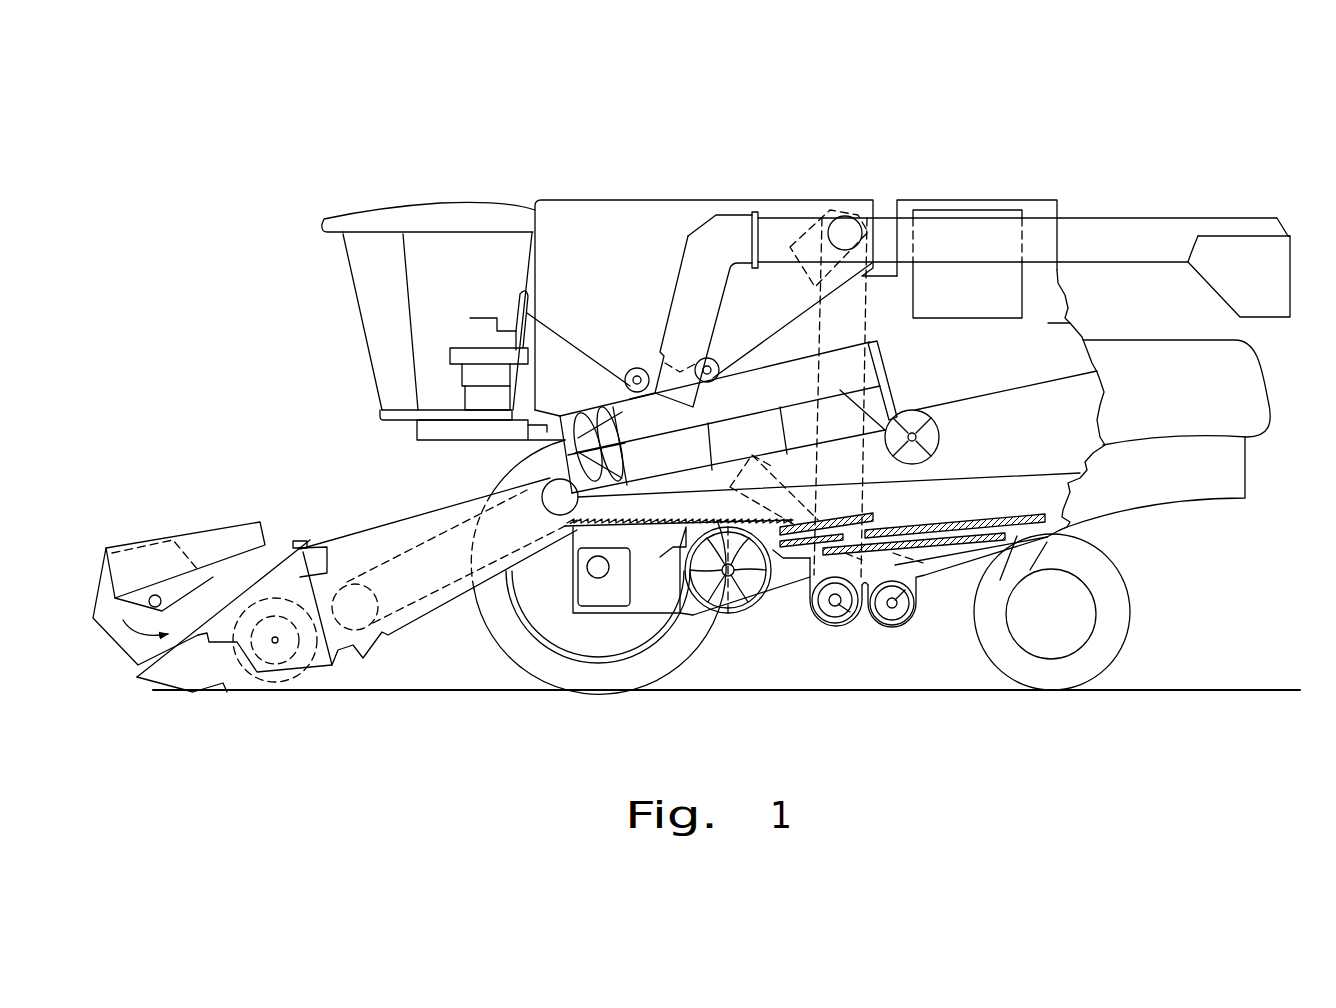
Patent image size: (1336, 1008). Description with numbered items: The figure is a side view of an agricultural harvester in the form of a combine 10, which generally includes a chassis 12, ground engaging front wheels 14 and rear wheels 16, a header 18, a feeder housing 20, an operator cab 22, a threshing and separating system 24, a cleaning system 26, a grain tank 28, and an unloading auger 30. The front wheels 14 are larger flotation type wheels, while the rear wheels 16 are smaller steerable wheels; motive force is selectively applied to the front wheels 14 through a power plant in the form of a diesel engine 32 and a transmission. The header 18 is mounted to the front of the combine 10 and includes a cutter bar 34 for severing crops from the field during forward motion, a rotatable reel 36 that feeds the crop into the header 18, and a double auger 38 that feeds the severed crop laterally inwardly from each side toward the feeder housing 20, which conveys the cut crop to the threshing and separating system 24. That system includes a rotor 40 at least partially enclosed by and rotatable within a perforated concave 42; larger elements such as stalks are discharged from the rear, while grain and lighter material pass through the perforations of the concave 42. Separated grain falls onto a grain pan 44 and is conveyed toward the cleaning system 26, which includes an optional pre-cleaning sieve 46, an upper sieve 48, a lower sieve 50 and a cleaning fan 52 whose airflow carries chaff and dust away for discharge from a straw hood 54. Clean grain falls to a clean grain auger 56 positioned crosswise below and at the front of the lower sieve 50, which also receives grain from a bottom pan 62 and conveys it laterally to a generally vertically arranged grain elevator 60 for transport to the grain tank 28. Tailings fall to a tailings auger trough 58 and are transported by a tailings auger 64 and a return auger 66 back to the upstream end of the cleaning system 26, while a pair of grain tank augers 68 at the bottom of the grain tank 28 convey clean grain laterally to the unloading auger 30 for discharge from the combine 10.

The combine 10 is at (424, 185).
The chassis 12 is at (1062, 530).
The front wheels 14 is at (503, 650).
The rear wheels 16 is at (1128, 633).
The header 18 is at (188, 518).
The feeder housing 20 is at (397, 522).
The operator cab 22 is at (356, 302).
The threshing and separating system 24 is at (503, 460).
The cleaning system 26 is at (787, 630).
The grain tank 28 is at (592, 198).
The unloading auger 30 is at (1143, 226).
The diesel engine 32 is at (958, 210).
The cutter bar 34 is at (203, 693).
The rotatable reel 36 is at (103, 590).
The double auger 38 is at (277, 662).
The rotor 40 is at (588, 408).
The perforated concave 42 is at (766, 395).
The grain pan 44 is at (577, 533).
The pre-cleaning sieve 46 is at (862, 520).
The upper sieve 48 is at (968, 516).
The lower sieve 50 is at (940, 535).
The cleaning fan 52 is at (733, 627).
The straw hood 54 is at (1253, 382).
The clean grain auger 56 is at (838, 623).
The tailings auger trough 58 is at (1047, 542).
The grain elevator 60 is at (865, 325).
The bottom pan 62 is at (1017, 536).
The tailings auger 64 is at (887, 625).
The return auger 66 is at (807, 498).
The grain tank augers 68 is at (636, 369).